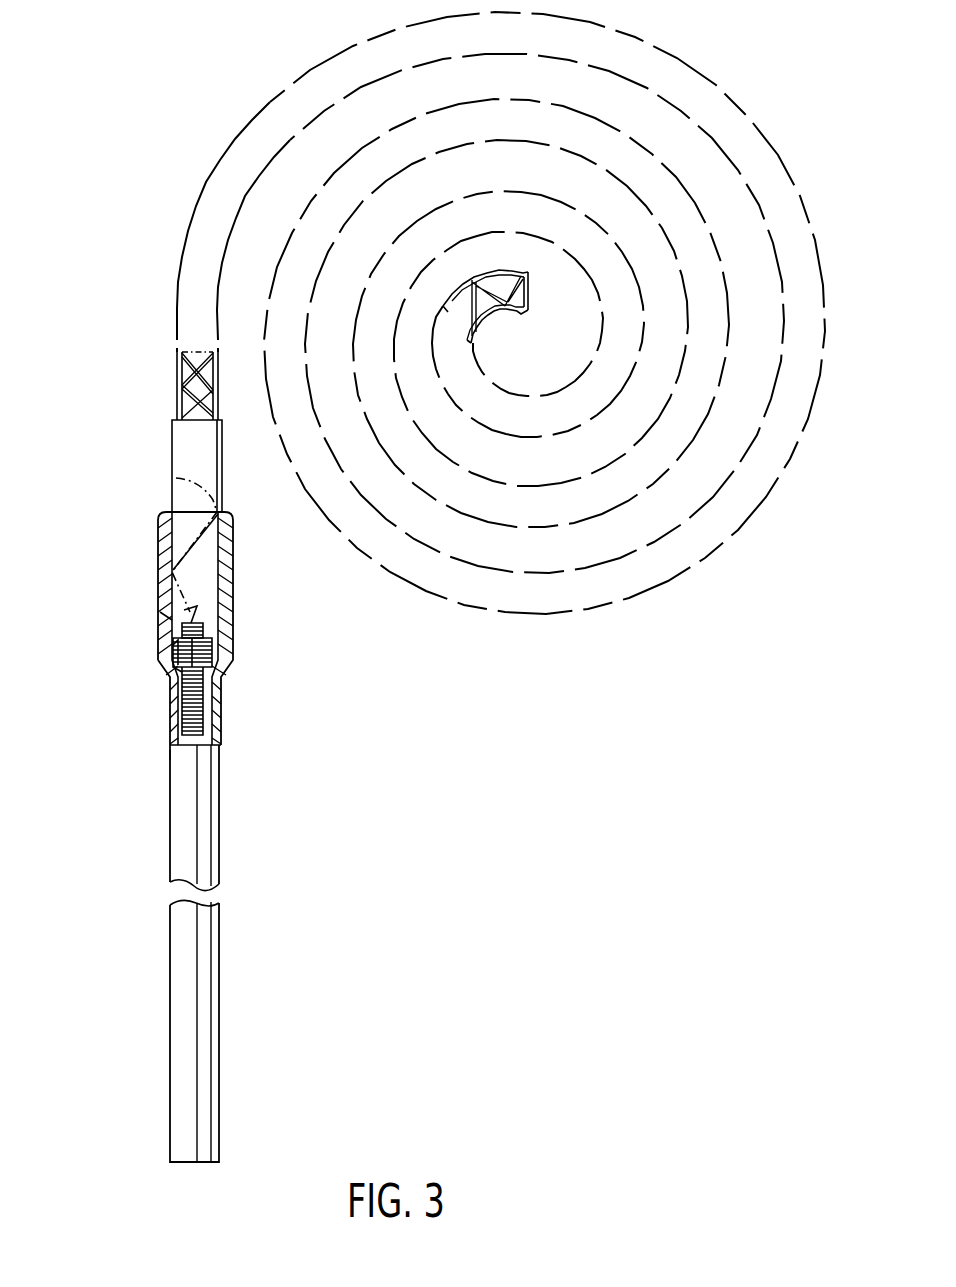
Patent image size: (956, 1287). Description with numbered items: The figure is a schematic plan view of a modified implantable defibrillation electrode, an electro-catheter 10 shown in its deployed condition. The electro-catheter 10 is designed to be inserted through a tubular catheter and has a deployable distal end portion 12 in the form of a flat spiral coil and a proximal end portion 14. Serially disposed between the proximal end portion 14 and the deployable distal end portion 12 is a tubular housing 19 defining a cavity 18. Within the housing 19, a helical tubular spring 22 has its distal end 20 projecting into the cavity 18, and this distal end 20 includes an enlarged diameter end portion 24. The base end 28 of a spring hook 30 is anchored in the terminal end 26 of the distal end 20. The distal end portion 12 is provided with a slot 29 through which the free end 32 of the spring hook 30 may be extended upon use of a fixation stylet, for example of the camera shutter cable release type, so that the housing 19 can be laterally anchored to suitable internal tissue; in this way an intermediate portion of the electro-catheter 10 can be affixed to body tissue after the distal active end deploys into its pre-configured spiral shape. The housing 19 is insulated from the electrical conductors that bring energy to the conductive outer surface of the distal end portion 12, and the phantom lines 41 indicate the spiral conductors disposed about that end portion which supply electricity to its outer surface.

The electro-catheter 10 is at (160, 770).
The deployable distal end portion 12 is at (273, 98).
The proximal end portion 14 is at (217, 1002).
The cavity 18 is at (214, 593).
The tubular housing 19 is at (160, 615).
The distal end 20 is at (178, 670).
The helical tubular spring 22 is at (203, 715).
The enlarged diameter end portion 24 is at (175, 645).
The terminal end 26 is at (222, 650).
The base end 28 is at (205, 633).
The slot 29 is at (178, 455).
The spring hook 30 is at (170, 550).
The free end 32 is at (176, 478).
The phantom lines 41 is at (180, 392).